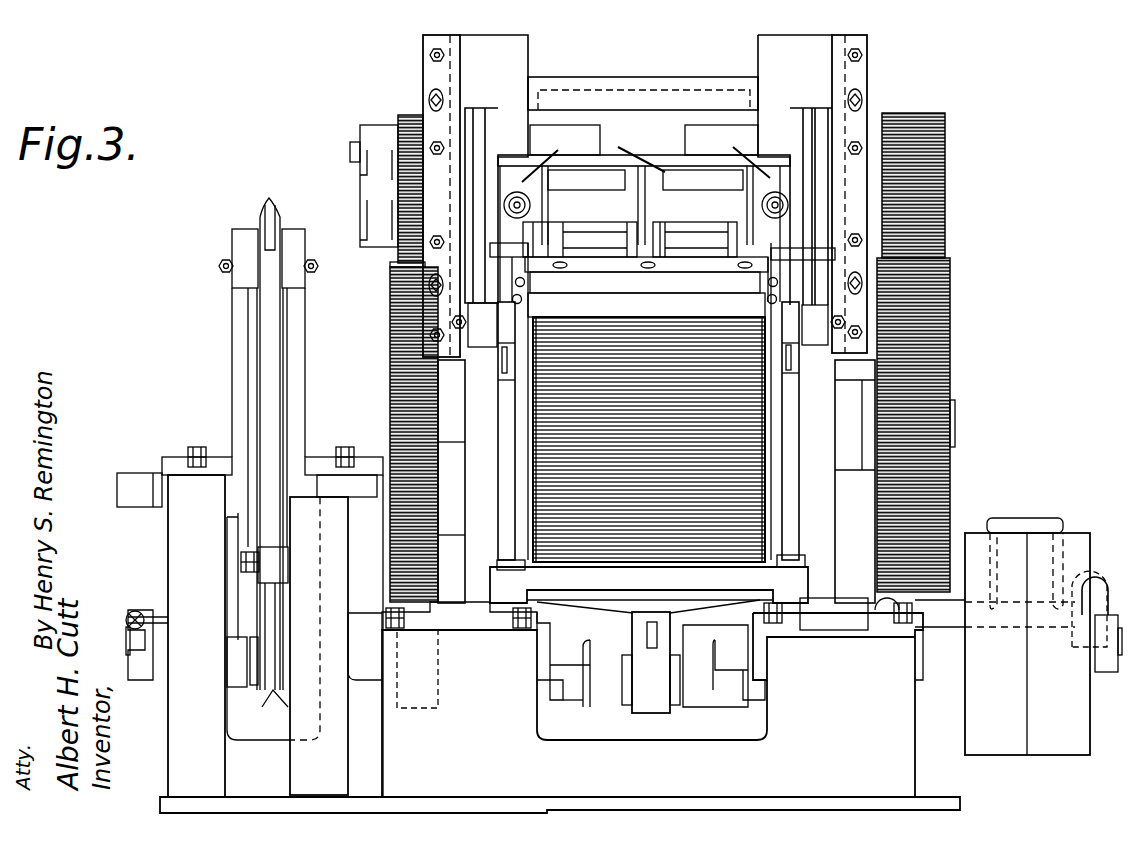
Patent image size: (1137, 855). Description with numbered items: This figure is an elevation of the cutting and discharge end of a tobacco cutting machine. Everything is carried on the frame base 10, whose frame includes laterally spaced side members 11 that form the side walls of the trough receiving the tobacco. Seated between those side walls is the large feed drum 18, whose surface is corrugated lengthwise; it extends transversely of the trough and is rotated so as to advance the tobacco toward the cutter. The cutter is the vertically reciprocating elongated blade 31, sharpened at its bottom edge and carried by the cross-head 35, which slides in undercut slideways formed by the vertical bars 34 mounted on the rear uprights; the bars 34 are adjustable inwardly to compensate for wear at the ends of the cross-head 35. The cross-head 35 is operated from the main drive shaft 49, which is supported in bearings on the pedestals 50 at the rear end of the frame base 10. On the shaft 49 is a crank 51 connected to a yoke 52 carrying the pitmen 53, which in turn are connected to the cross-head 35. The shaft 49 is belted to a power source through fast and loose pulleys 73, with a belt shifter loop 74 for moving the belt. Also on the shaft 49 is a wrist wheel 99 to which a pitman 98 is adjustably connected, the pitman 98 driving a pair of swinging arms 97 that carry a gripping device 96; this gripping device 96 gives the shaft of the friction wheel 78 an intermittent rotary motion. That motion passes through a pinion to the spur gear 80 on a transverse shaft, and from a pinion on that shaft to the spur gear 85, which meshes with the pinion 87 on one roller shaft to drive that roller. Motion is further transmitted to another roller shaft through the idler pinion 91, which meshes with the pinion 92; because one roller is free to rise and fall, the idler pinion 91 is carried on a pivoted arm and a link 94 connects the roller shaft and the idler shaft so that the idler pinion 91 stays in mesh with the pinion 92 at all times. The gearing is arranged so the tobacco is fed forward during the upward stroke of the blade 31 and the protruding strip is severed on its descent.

The frame base 10 is at (560, 705).
The side members 11 is at (467, 384).
The feed drum 18 is at (533, 423).
The cutting blade 31 is at (585, 128).
The vertical bars 34 is at (430, 70).
The cross-head 35 is at (494, 101).
The main drive shaft 49 is at (585, 660).
The pedestals 50 is at (455, 636).
The crank 51 is at (700, 703).
The yoke 52 is at (649, 590).
The pitmen 53 is at (515, 470).
The fast and loose pulleys 73 is at (1034, 760).
The belt shifter loop 74 is at (1040, 517).
The friction wheel 78 is at (270, 705).
The spur gear 80 is at (398, 417).
The spur gear 85 is at (940, 340).
The pinion 87 is at (940, 148).
The idler pinion 91 is at (402, 113).
The pinion 92 is at (408, 236).
The link 94 is at (372, 188).
The gripping device 96 is at (270, 200).
The swinging arms 97 is at (238, 348).
The pitman 98 is at (272, 370).
The wrist wheel 99 is at (335, 778).